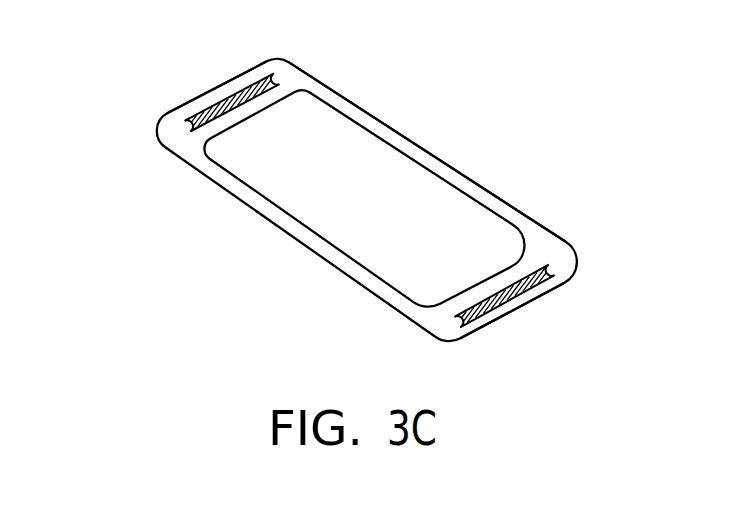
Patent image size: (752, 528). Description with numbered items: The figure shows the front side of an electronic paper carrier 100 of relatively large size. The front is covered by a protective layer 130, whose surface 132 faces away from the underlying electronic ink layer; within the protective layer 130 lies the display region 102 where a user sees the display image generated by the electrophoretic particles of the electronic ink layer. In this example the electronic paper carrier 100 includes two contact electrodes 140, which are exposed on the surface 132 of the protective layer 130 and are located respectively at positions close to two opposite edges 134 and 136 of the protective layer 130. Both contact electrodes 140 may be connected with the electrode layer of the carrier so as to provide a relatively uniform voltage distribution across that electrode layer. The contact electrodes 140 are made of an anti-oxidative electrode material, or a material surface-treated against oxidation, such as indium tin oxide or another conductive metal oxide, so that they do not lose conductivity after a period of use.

The electronic paper carrier 100 is at (366, 202).
The display region 102 is at (250, 192).
The protective layer 130 is at (366, 192).
The surface of the protective layer 132 is at (382, 121).
The edge of the protective layer 134 is at (527, 307).
The edge of the protective layer 136 is at (221, 82).
The contact electrode 140 is at (186, 116).